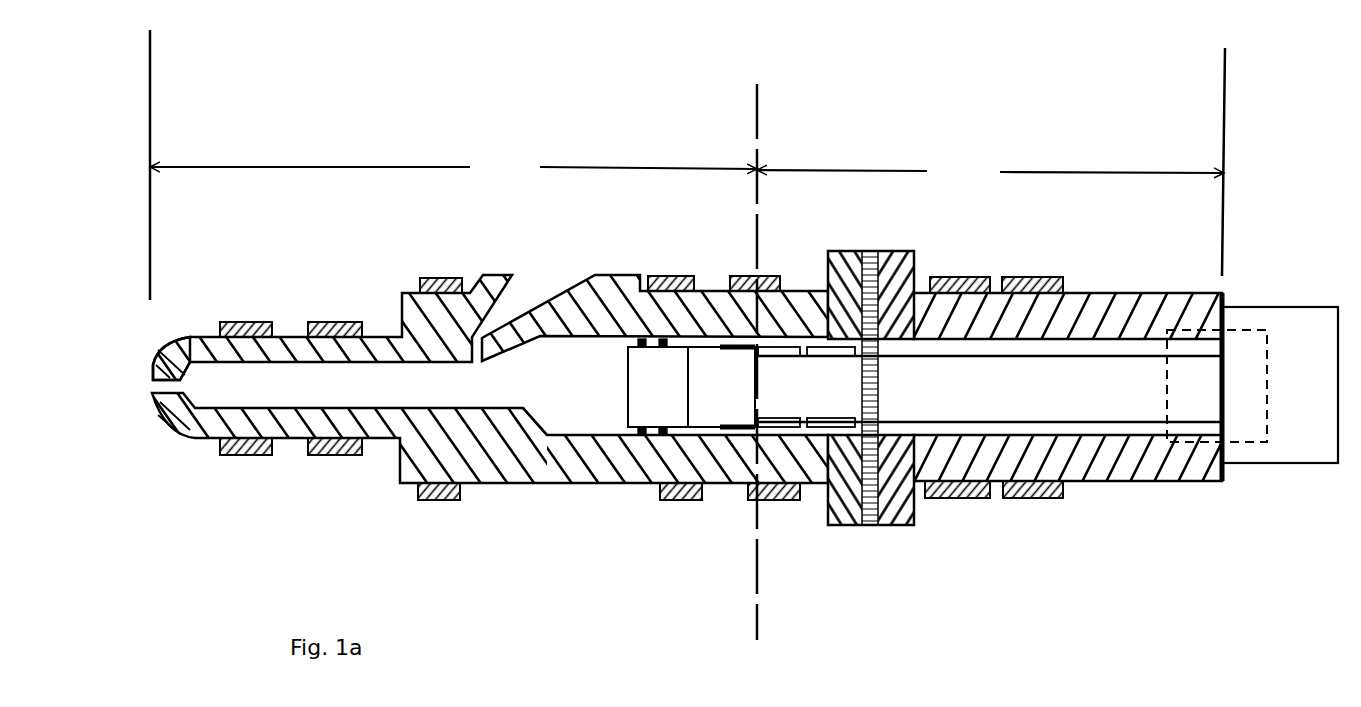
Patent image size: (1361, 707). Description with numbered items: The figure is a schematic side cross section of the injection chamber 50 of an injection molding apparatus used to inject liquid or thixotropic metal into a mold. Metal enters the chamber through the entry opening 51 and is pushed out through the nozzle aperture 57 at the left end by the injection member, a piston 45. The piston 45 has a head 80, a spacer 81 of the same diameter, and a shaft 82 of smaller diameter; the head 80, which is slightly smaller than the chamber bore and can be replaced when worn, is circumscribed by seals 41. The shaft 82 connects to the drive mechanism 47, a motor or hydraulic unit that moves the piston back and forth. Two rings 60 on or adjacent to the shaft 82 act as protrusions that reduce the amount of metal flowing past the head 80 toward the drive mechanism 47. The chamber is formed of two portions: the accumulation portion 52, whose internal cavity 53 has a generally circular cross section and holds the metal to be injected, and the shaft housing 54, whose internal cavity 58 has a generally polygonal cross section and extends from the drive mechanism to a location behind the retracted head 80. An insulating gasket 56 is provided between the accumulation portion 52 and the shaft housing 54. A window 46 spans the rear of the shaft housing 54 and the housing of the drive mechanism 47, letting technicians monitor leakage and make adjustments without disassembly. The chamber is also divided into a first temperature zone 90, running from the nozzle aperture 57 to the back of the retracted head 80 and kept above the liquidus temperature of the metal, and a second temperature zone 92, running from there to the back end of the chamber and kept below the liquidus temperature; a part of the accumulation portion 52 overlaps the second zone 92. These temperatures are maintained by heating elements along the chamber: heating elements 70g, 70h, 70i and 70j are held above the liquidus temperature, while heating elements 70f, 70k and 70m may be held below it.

The seals 41 is at (662, 339).
The piston 45 is at (1130, 408).
The window 46 is at (1243, 330).
The drive mechanism 47 is at (1310, 307).
The injection chamber 50 is at (183, 400).
The entry opening 51 is at (533, 290).
The accumulation portion 52 is at (580, 483).
The internal cavity 53 is at (602, 413).
The shaft housing 54 is at (1107, 481).
The insulating gasket 56 is at (867, 527).
The nozzle aperture 57 is at (183, 400).
The internal cavity 58 is at (1103, 346).
The ring 60 is at (833, 422).
The heating element 70f is at (793, 500).
The heating element 70g is at (687, 500).
The heating element 70h is at (430, 500).
The heating element 70i is at (313, 457).
The heating element 70j is at (230, 320).
The heating element 70k is at (957, 408).
The heating element 70m is at (1034, 408).
The head 80 is at (666, 394).
The spacer 81 is at (729, 396).
The shaft 82 is at (1046, 409).
The first temperature zone 90 is at (453, 335).
The second temperature zone 92 is at (991, 162).